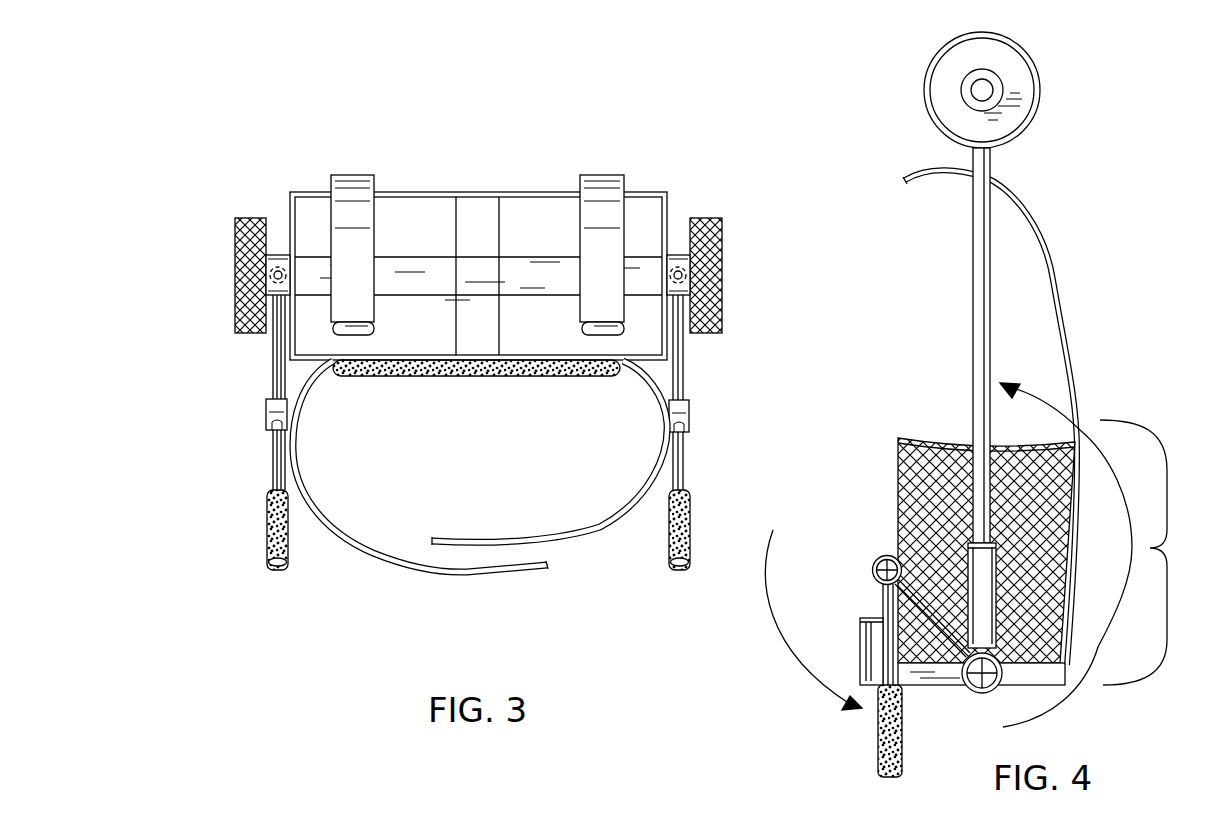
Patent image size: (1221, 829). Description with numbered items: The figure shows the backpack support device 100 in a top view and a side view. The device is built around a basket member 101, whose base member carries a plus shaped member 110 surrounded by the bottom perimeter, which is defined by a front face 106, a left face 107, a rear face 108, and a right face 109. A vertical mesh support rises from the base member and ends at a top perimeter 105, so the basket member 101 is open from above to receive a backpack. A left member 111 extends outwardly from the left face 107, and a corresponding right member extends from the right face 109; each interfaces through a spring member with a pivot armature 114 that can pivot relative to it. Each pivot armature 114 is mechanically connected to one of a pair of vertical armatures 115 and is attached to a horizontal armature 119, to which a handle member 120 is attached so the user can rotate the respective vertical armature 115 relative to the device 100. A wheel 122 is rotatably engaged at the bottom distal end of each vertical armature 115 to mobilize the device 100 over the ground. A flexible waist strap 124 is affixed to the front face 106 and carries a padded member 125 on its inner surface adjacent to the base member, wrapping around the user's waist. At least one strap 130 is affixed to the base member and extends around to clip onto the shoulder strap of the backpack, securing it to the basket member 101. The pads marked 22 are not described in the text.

In FIG. 3, the backpack support device 100 is at (326, 104).
In FIG. 4, the backpack support device 100 is at (1092, 104).
In FIG. 4, the basket member 101 is at (992, 555).
In FIG. 4, the top perimeter 105 is at (937, 440).
In FIG. 3, the front face 106 is at (660, 403).
In FIG. 3, the left face 107 is at (667, 213).
In FIG. 3, the rear face 108 is at (520, 192).
In FIG. 3, the right face 109 is at (290, 208).
In FIG. 3, the plus shaped member 110 is at (465, 222).
In FIG. 3, the left member 111 is at (690, 275).
In FIG. 4, the pivot armature 114 is at (983, 628).
In FIG. 4, the vertical armature 115 is at (990, 242).
In FIG. 3, the horizontal armature 119 is at (275, 362).
In FIG. 4, the horizontal armature 119 is at (933, 585).
In FIG. 3, the handle member 120 is at (273, 522).
In FIG. 4, the handle member 120 is at (903, 702).
In FIG. 4, the wheel 122 is at (924, 90).
In FIG. 3, the waist strap 124 is at (347, 537).
In FIG. 3, the padded member 125 is at (417, 376).
In FIG. 4, the strap 130 is at (1063, 299).
In FIG. 3, the pad 22 is at (258, 278).